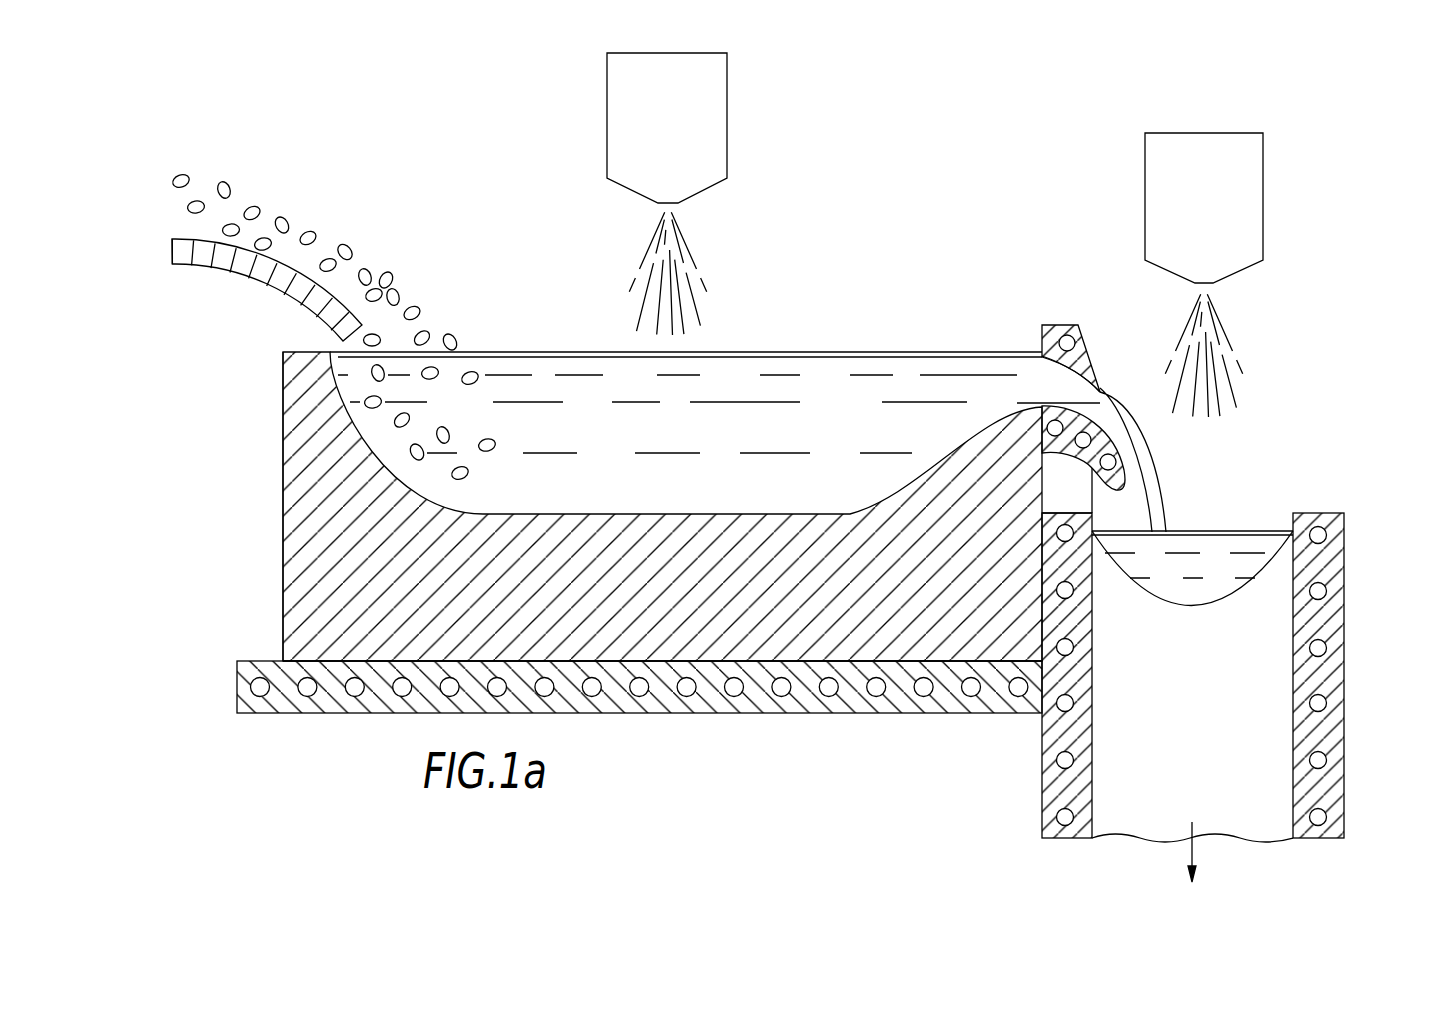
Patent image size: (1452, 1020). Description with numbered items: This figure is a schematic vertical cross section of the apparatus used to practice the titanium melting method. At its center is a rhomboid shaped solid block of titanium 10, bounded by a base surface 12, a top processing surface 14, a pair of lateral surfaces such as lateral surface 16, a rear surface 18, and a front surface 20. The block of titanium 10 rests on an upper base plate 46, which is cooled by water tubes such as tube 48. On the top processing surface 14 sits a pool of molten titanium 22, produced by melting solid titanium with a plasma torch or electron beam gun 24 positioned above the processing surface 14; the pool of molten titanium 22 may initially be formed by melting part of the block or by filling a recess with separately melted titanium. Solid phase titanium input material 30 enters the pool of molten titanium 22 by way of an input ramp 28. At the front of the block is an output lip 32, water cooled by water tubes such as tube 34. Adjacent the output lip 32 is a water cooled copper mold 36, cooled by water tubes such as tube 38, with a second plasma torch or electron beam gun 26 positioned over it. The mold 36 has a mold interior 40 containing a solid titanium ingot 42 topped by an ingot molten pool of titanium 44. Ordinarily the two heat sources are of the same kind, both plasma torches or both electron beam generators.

The solid block of titanium 10 is at (623, 496).
The base surface 12 is at (635, 699).
The top processing surface 14 is at (307, 352).
The lateral surface 16 is at (300, 575).
The rear surface 18 is at (283, 543).
The front surface 20 is at (1038, 505).
The pool of molten titanium 22 is at (514, 352).
The plasma torch or electron beam gun 24 is at (607, 122).
The second plasma torch or electron beam gun 26 is at (1264, 180).
The input ramp 28 is at (242, 276).
The solid phase titanium input material 30 is at (403, 300).
The output lip 32 is at (1063, 325).
The water tube 34 is at (1082, 345).
The water cooled copper mold 36 is at (1228, 675).
The water tube 38 is at (1326, 816).
The mold interior 40 is at (1192, 516).
The solid titanium ingot 42 is at (1232, 822).
The ingot molten pool of titanium 44 is at (1237, 530).
The upper base plate 46 is at (647, 714).
The water tube 48 is at (778, 694).